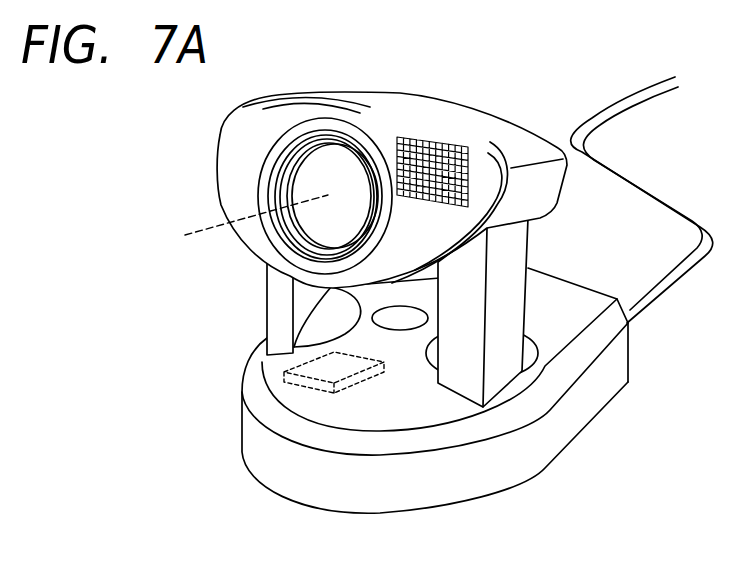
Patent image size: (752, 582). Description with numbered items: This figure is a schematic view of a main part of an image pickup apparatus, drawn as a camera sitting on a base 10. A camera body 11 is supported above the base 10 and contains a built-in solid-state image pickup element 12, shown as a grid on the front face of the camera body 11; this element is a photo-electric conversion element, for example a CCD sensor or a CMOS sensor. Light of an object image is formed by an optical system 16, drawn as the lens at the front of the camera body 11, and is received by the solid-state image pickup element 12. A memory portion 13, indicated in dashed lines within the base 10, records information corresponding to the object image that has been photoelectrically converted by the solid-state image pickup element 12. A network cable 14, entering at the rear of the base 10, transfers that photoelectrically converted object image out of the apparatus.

The base 10 is at (270, 560).
The camera body 11 is at (240, 146).
The solid-state image pickup element 12 is at (452, 152).
The memory portion 13 is at (283, 373).
The network cable 14 is at (618, 97).
The optical system 16 is at (342, 168).